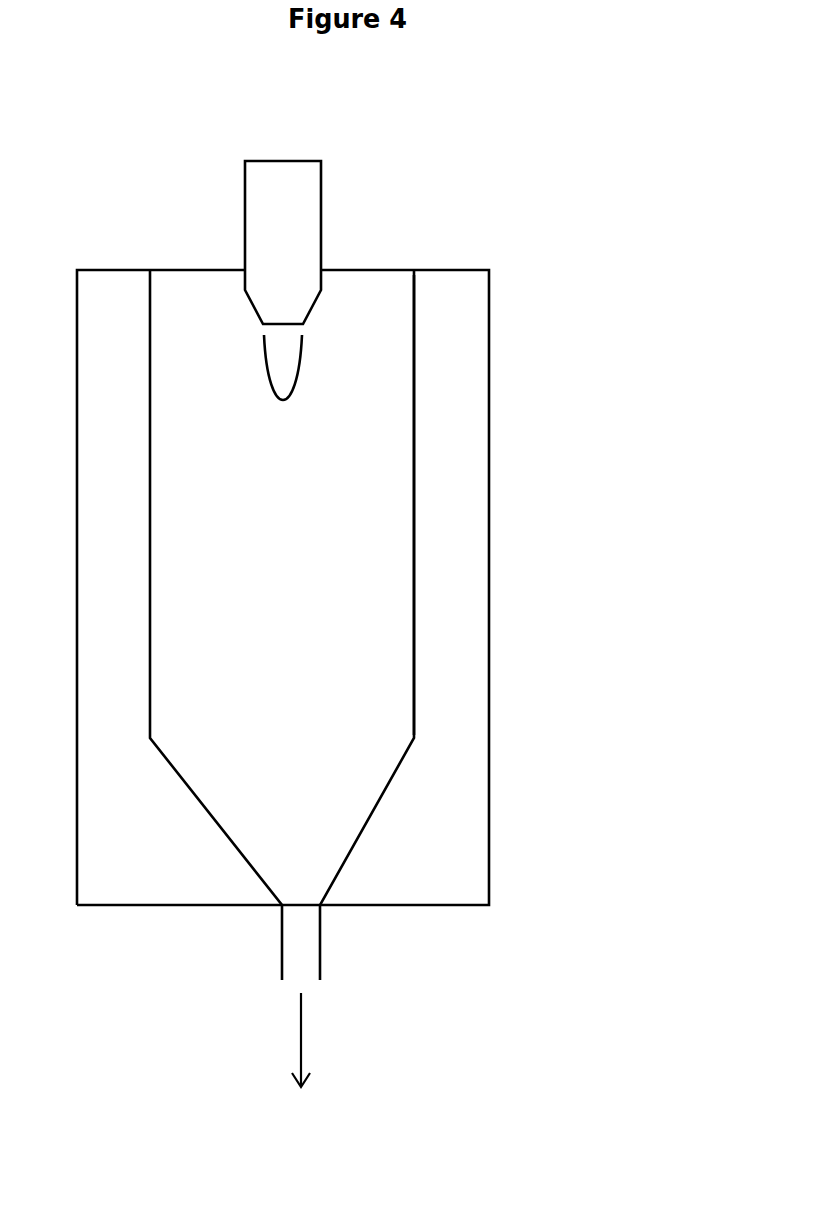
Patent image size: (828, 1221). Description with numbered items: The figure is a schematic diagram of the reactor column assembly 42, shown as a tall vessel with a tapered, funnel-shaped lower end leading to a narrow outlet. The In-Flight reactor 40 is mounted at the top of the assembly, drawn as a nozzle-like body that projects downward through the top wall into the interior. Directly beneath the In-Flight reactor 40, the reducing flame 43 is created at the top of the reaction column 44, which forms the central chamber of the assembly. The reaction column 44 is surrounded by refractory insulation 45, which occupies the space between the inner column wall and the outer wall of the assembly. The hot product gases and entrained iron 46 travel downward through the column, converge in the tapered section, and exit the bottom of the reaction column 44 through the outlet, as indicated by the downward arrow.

The In-Flight reactor 40 is at (340, 210).
The reactor column assembly 42 is at (508, 358).
The reducing flame 43 is at (303, 367).
The reaction column 44 is at (282, 625).
The refractory insulation 45 is at (437, 505).
The hot product gases and entrained iron 46 is at (327, 1040).